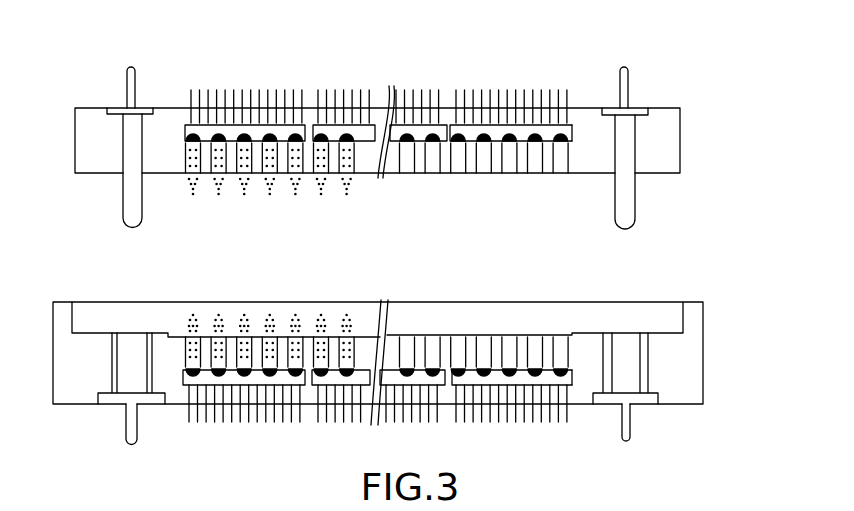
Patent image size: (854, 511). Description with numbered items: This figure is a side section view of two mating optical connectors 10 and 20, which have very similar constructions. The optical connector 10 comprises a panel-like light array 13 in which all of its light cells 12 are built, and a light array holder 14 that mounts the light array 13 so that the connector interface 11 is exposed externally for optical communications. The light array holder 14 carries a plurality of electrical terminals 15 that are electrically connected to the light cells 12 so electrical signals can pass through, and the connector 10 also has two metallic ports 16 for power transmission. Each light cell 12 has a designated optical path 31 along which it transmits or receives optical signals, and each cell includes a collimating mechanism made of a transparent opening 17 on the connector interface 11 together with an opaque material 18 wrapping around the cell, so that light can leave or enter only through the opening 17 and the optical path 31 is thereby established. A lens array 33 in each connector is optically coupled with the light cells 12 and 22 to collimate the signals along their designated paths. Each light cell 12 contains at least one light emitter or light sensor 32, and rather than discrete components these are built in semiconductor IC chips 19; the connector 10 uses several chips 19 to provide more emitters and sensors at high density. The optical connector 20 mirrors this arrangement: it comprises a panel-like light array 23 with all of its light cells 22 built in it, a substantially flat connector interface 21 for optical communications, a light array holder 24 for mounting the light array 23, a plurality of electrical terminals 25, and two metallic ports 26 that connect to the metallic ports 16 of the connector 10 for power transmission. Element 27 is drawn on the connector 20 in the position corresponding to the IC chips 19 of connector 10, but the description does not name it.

The optical connector 10 is at (685, 143).
The connector interface 11 is at (334, 175).
The light cells 12 is at (560, 174).
The light array 13 is at (185, 142).
The light array holder 14 is at (160, 168).
The electrical terminals 15 is at (262, 88).
The metallic ports 16 is at (123, 195).
The transparent opening 17 is at (486, 175).
The opaque material 18 is at (473, 175).
The semiconductor IC chip 19 is at (570, 128).
The optical connector 20 is at (708, 355).
The connector interface 21 is at (333, 336).
The light cells 22 is at (565, 336).
The light array 23 is at (183, 372).
The light array holder 24 is at (160, 340).
The electrical terminals 25 is at (262, 425).
The metallic ports 26 is at (113, 333).
The contact module 27 is at (485, 336).
The optical path 31 is at (244, 200).
The light emitter or light sensor 32 is at (190, 140).
The lens array 33 is at (566, 176).